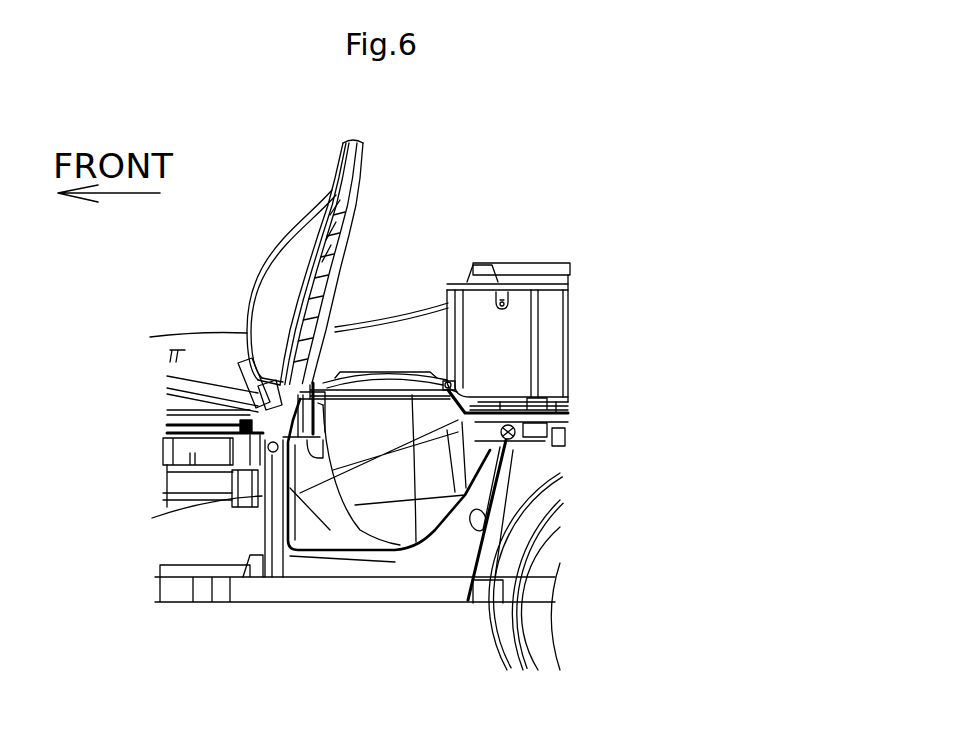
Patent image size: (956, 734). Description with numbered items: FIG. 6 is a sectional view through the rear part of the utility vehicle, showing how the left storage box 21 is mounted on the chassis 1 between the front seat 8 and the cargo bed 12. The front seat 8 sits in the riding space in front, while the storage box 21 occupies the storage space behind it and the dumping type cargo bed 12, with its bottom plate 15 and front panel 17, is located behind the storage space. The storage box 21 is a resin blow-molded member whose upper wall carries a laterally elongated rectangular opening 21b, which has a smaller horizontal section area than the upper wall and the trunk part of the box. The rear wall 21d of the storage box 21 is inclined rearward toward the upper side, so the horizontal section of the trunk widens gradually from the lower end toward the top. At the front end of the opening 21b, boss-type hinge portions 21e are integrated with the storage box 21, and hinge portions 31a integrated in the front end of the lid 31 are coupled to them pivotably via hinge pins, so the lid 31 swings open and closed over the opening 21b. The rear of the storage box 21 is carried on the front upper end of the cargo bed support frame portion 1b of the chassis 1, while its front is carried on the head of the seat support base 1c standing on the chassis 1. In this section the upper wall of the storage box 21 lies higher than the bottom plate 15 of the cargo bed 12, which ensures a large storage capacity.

The chassis 1 is at (298, 592).
The cargo bed support frame portion 1b is at (564, 434).
The seat support base 1c is at (265, 519).
The front seat 8 is at (210, 362).
The cargo bed 12 is at (580, 262).
The bottom plate 15 is at (551, 388).
The front panel 17 is at (433, 332).
The left storage box 21 is at (371, 488).
The opening 21b is at (425, 548).
The rear wall 21d is at (488, 532).
The hinge portion 21e is at (297, 304).
The lid 31 is at (387, 372).
The hinge portion 31a is at (323, 263).